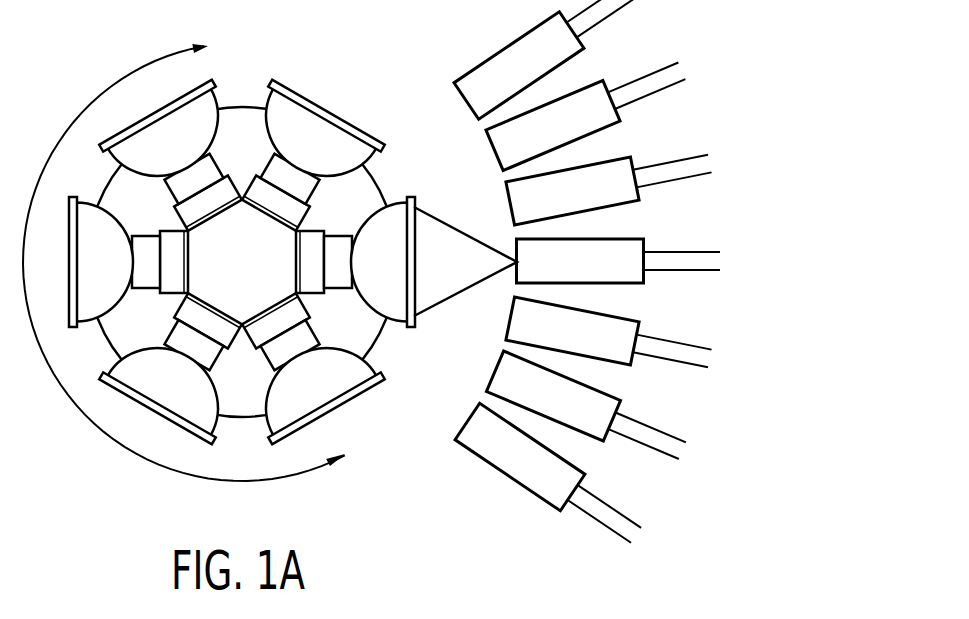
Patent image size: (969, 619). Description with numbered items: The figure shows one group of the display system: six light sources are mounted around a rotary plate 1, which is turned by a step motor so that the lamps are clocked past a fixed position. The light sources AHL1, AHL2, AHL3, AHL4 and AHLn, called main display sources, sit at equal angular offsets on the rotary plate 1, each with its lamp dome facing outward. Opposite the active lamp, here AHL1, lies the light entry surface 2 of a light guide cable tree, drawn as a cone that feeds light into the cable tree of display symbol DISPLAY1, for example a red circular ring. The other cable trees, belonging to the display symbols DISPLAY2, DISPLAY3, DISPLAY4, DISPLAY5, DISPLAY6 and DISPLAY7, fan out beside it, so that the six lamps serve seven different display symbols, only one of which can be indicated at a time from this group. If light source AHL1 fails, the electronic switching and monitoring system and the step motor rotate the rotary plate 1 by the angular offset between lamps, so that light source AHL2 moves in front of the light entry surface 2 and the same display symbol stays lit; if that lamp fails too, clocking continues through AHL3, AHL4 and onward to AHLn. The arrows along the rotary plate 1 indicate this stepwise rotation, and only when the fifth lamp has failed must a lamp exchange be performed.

The rotary plate 1 is at (219, 287).
The light entry surface 2 is at (514, 274).
The light source AHL1 is at (314, 203).
The light source AHL2 is at (299, 360).
The light source AHL3 is at (185, 360).
The light source AHL4 is at (128, 262).
The light source AHLn is at (185, 164).
The display symbol DISPLAY1 is at (619, 261).
The display symbol DISPLAY2 is at (610, 183).
The display symbol DISPLAY3 is at (588, 111).
The display symbol DISPLAY4 is at (550, 59).
The display symbol DISPLAY5 is at (610, 338).
The display symbol DISPLAY6 is at (588, 411).
The display symbol DISPLAY7 is at (551, 478).